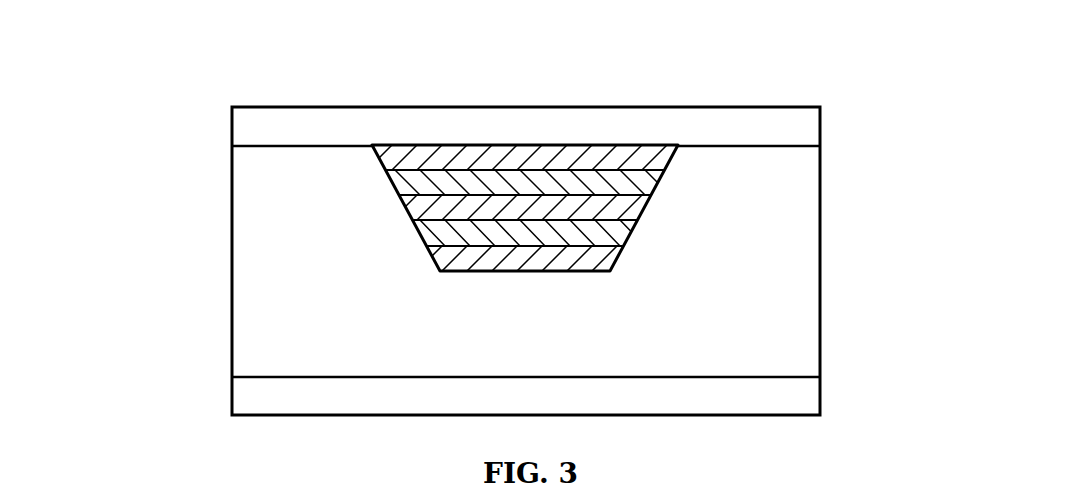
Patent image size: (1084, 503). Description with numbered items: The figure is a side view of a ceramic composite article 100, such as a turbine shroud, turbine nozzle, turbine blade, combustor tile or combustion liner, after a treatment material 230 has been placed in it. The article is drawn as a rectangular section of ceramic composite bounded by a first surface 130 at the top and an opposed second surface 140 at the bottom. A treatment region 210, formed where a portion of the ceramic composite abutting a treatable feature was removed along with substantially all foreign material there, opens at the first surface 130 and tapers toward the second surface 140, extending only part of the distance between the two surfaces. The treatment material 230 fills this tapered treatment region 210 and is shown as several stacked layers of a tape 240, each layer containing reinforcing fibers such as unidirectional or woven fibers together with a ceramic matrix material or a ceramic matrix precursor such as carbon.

The ceramic composite article 100 is at (213, 52).
The first surface 130 is at (272, 127).
The second surface 140 is at (250, 396).
The treatment region 210 is at (405, 240).
The treatment material 230 is at (636, 266).
The tape 240 is at (653, 183).